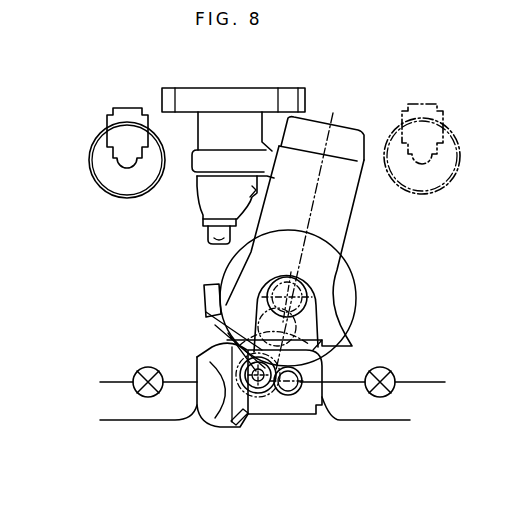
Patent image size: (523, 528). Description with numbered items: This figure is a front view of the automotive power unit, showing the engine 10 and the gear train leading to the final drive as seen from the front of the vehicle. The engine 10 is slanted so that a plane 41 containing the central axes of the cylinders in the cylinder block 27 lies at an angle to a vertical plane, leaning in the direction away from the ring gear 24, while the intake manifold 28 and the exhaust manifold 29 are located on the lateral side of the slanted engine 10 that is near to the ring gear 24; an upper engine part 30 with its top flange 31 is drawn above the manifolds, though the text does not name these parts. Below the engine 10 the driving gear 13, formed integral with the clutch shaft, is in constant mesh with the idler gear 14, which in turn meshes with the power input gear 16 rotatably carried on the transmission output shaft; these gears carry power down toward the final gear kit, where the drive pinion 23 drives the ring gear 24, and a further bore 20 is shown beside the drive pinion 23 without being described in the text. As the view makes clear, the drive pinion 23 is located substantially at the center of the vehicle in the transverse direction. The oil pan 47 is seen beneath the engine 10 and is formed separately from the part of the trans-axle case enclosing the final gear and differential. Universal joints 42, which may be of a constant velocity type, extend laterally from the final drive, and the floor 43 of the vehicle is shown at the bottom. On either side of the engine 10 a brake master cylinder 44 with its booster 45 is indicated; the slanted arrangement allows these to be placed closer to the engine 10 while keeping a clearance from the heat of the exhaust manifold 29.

The engine 10 is at (355, 207).
The driving gear 13 is at (313, 289).
The idler gear 14 is at (296, 330).
The power input gear 16 is at (265, 387).
The bore 20 is at (302, 376).
The drive pinion 23 is at (259, 393).
The ring gear 24 is at (234, 420).
The cylinder block 27 is at (344, 227).
The intake manifold 28 is at (194, 167).
The exhaust manifold 29 is at (201, 200).
The upper body 30 is at (200, 133).
The flange 31 is at (162, 95).
The plane containing central axes of cylinders 41 is at (328, 138).
The universal joints 42 is at (140, 393).
The floor 43 is at (395, 421).
The brake master cylinder 44 is at (116, 112).
The booster 45 is at (90, 160).
The oil pan 47 is at (199, 323).